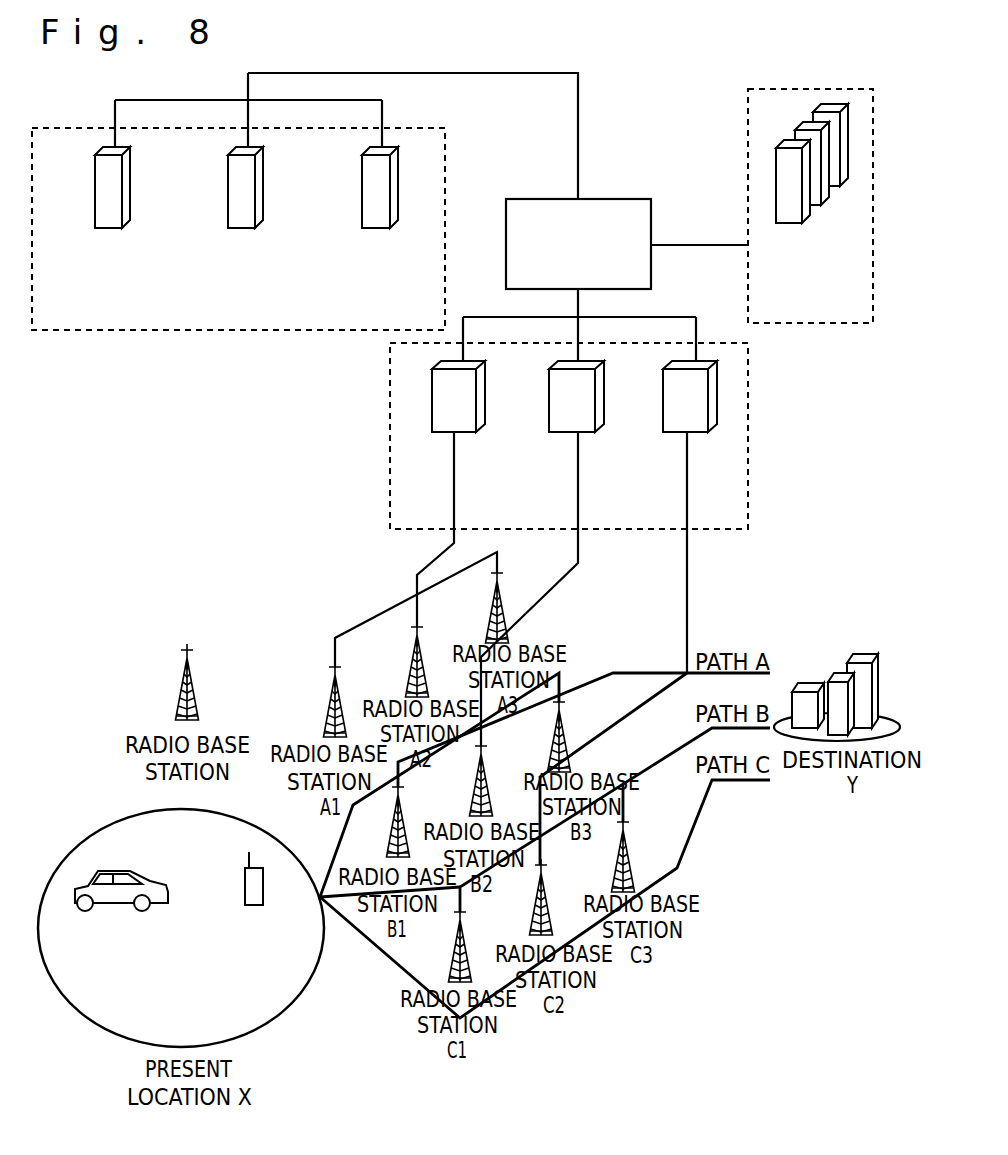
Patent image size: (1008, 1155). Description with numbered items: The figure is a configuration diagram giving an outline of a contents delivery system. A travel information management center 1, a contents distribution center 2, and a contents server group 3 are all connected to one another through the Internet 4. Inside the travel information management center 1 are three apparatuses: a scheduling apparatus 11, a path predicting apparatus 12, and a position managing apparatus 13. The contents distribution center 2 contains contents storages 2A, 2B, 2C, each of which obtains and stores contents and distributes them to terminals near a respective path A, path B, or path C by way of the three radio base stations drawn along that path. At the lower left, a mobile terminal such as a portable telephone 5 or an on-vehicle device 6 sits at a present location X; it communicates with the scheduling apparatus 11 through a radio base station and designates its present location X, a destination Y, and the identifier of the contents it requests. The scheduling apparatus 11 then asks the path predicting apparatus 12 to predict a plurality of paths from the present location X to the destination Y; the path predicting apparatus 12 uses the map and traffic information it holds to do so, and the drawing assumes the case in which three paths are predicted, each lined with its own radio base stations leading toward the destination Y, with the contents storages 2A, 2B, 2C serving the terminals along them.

The travel information management center 1 is at (445, 147).
The scheduling apparatus 11 is at (93, 173).
The path predicting apparatus 12 is at (226, 173).
The position managing apparatus 13 is at (360, 173).
The contents distribution center 2 is at (390, 428).
The contents storage 2A is at (455, 444).
The contents storage 2B is at (578, 444).
The contents storage 2C is at (691, 444).
The contents server group 3 is at (818, 89).
The Internet 4 is at (620, 199).
The portable telephone 5 is at (255, 862).
The on-vehicle device 6 is at (118, 862).